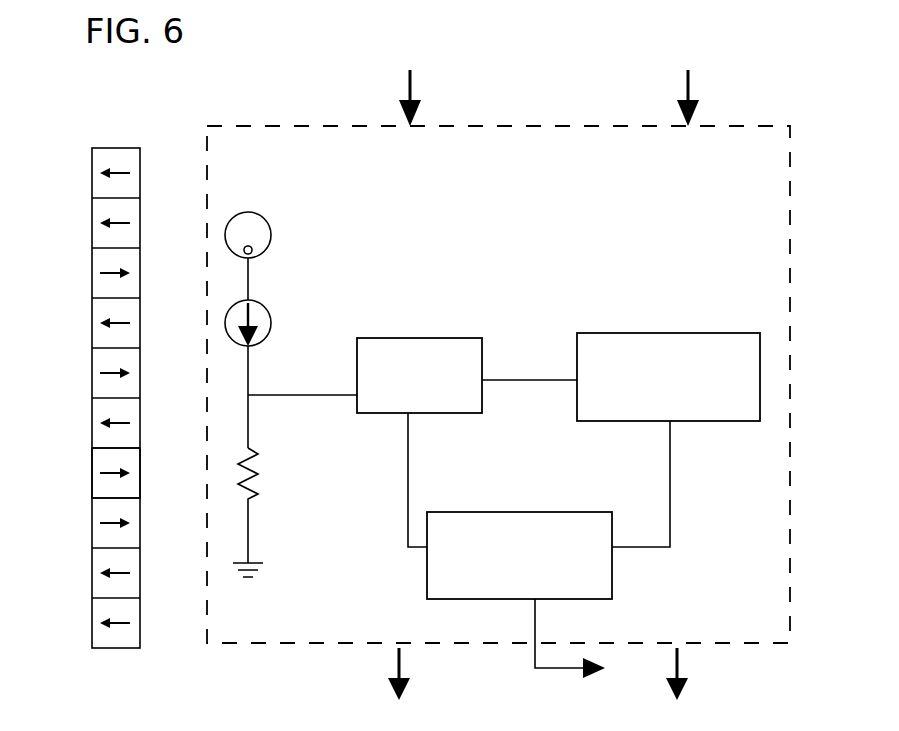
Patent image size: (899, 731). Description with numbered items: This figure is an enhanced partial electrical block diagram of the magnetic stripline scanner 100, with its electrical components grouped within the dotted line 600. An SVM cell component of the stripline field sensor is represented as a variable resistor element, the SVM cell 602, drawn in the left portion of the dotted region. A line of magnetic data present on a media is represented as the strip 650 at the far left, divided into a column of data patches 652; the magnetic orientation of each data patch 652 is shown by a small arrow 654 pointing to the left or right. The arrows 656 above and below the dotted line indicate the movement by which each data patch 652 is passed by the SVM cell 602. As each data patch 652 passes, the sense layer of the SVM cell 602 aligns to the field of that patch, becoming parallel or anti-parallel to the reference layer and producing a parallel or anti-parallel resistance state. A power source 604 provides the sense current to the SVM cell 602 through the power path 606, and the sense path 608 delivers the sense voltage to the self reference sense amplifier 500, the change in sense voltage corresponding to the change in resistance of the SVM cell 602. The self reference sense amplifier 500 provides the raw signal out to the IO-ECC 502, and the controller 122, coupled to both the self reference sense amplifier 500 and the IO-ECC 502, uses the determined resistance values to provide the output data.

The magnetic stripline scanner 100 is at (797, 124).
The controller 122 is at (540, 512).
The self reference sense amplifier 500 is at (458, 338).
The I/O buffer with error correction circuit (IO-ECC) 502 is at (670, 333).
The dotted line 600 is at (790, 567).
The SVM cell 602 is at (238, 492).
The power source 604 is at (268, 222).
The power path 606 is at (248, 372).
The sense path 608 is at (320, 397).
The strip 650 is at (143, 148).
The data patch 652 is at (103, 463).
The small arrow 654 is at (116, 469).
The arrows 656 is at (410, 76).